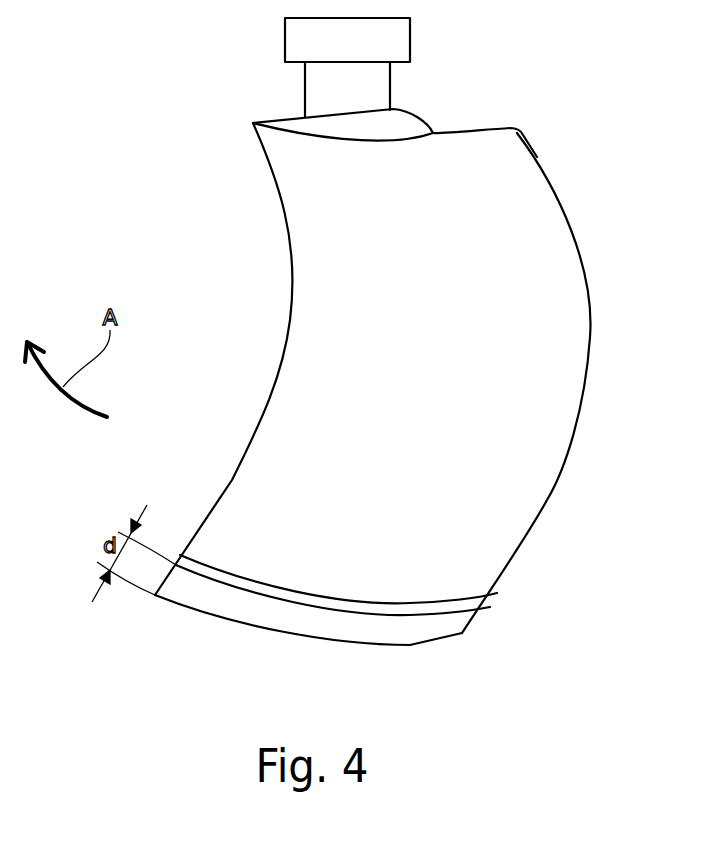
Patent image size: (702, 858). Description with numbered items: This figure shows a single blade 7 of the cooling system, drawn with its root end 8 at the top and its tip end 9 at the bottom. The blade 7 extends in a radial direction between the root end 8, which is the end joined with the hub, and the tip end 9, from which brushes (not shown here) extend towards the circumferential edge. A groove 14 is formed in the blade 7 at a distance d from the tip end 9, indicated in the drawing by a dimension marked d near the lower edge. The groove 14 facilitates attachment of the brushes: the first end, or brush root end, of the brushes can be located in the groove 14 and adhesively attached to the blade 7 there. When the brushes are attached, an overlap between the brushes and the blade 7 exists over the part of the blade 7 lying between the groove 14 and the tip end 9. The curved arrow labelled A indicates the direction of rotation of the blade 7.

The blade 7 is at (405, 389).
The root end 8 is at (476, 130).
The tip end 9 is at (408, 645).
The groove 14 is at (490, 602).